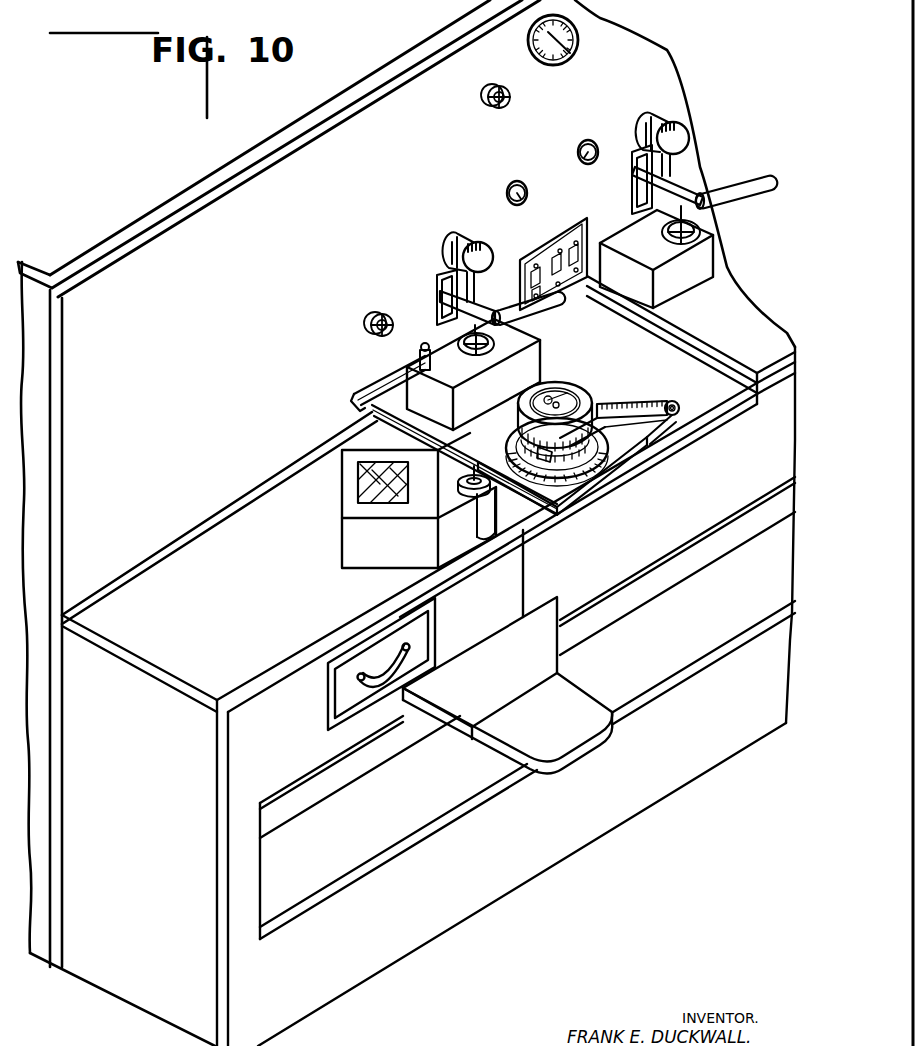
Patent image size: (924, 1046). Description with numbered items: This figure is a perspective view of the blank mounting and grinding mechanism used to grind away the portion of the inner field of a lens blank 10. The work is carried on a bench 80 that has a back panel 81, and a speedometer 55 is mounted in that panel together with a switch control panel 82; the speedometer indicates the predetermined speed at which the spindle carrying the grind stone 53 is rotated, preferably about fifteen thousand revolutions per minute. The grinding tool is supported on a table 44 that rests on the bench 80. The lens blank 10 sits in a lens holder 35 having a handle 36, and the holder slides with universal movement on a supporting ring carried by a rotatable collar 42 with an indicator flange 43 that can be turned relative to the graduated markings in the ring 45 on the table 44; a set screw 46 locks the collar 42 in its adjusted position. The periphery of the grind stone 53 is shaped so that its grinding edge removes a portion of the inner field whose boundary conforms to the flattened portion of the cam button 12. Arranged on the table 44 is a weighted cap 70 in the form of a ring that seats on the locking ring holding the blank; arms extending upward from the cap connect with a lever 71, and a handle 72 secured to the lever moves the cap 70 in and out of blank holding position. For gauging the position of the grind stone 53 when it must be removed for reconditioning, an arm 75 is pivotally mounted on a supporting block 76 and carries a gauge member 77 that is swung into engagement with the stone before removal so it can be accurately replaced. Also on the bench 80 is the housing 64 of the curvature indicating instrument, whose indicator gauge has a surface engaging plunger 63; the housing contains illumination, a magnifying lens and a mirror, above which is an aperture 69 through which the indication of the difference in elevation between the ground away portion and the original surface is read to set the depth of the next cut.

The lens blank 10 is at (600, 447).
The cam button 12 is at (566, 381).
The lens holder 35 is at (519, 413).
The handle 36 is at (634, 402).
The rotatable collar 42 is at (650, 462).
The indicator flange 43 is at (612, 460).
The table 44 is at (566, 505).
The graduated ring 45 is at (594, 468).
The set screw 46 is at (545, 462).
The grind stone 53 is at (553, 386).
The speedometer 55 is at (577, 50).
The plunger 63 is at (460, 477).
The housing 64 is at (391, 518).
The aperture 69 is at (357, 494).
The weighted cap 70 is at (480, 362).
The lever 71 is at (420, 348).
The handle 72 is at (520, 310).
The arm 75 is at (353, 393).
The supporting block 76 is at (560, 320).
The gauge member 77 is at (364, 418).
The bench 80 is at (428, 661).
The back panel 81 is at (406, 523).
The switch control panel 82 is at (545, 255).